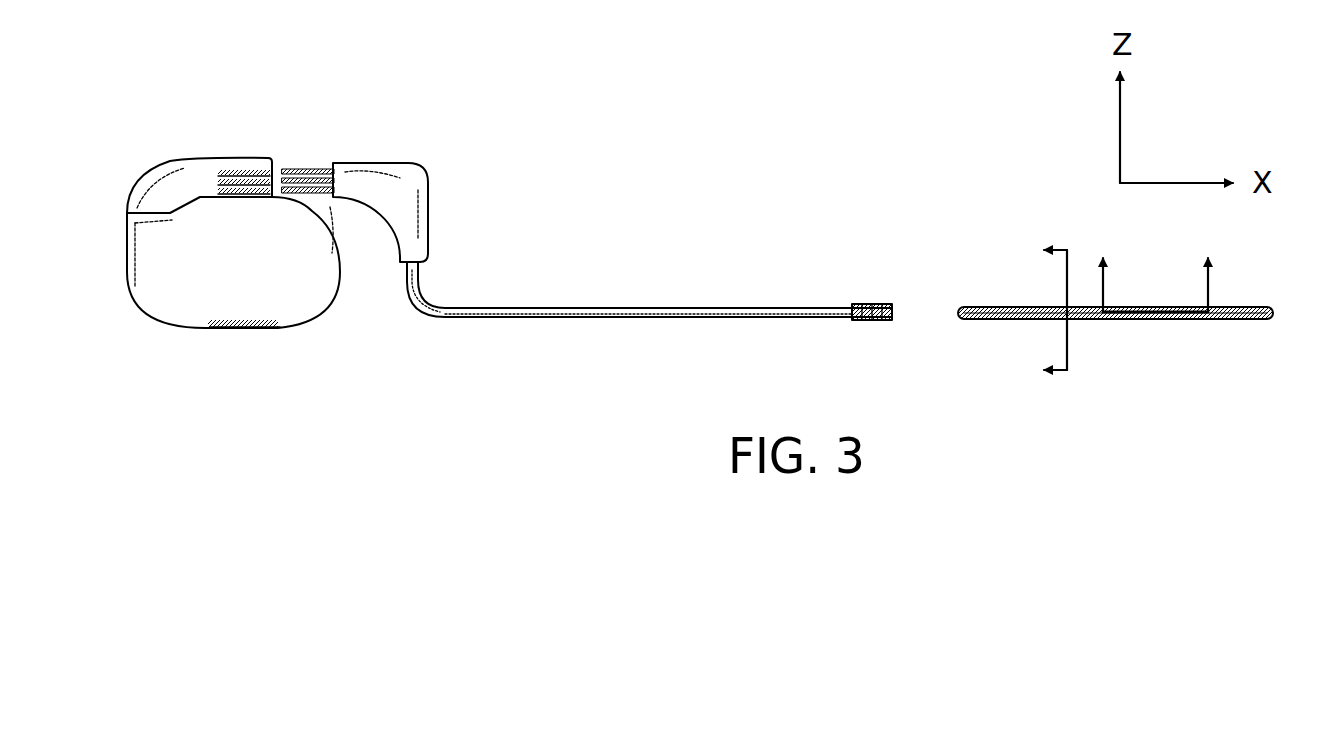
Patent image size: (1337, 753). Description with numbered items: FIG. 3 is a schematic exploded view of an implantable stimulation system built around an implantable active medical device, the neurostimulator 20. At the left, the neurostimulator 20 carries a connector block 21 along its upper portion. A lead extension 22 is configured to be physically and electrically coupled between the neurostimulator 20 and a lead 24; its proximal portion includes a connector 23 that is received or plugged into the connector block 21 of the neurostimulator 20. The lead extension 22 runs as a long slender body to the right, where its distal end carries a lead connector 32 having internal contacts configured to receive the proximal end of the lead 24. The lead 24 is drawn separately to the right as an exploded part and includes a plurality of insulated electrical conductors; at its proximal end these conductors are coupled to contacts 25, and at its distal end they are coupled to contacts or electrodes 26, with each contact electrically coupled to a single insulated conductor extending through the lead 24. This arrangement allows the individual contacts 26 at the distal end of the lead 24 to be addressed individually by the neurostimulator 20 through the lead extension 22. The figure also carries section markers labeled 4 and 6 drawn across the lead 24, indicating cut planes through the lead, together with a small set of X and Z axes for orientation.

The neurostimulator 20 is at (526, 246).
The connector block 21 is at (235, 158).
The lead extension 22 is at (666, 277).
The connector 23 is at (424, 172).
The lead 24 is at (1119, 355).
The contacts 25 is at (983, 320).
The contacts/electrodes 26 is at (1248, 320).
The lead connector 32 is at (867, 305).
The section line 4- 4 is at (1170, 278).
The section line 6- 6 is at (1042, 311).